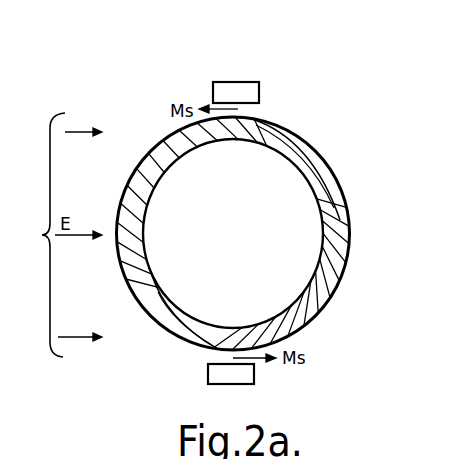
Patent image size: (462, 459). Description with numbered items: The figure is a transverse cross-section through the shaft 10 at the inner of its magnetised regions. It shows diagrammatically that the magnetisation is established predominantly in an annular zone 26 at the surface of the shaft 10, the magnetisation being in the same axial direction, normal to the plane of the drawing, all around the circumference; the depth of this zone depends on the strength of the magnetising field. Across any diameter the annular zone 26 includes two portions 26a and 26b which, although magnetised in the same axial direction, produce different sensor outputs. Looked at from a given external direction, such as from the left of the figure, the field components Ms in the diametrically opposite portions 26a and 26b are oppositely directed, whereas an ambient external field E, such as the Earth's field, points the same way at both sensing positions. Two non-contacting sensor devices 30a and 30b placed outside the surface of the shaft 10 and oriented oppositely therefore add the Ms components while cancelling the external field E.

The shaft 10 is at (307, 132).
The annular zone 26 is at (322, 178).
The zone portion 26a is at (256, 121).
The zone portion 26b is at (212, 350).
The sensor device 30a is at (252, 70).
The sensor device 30b is at (235, 377).